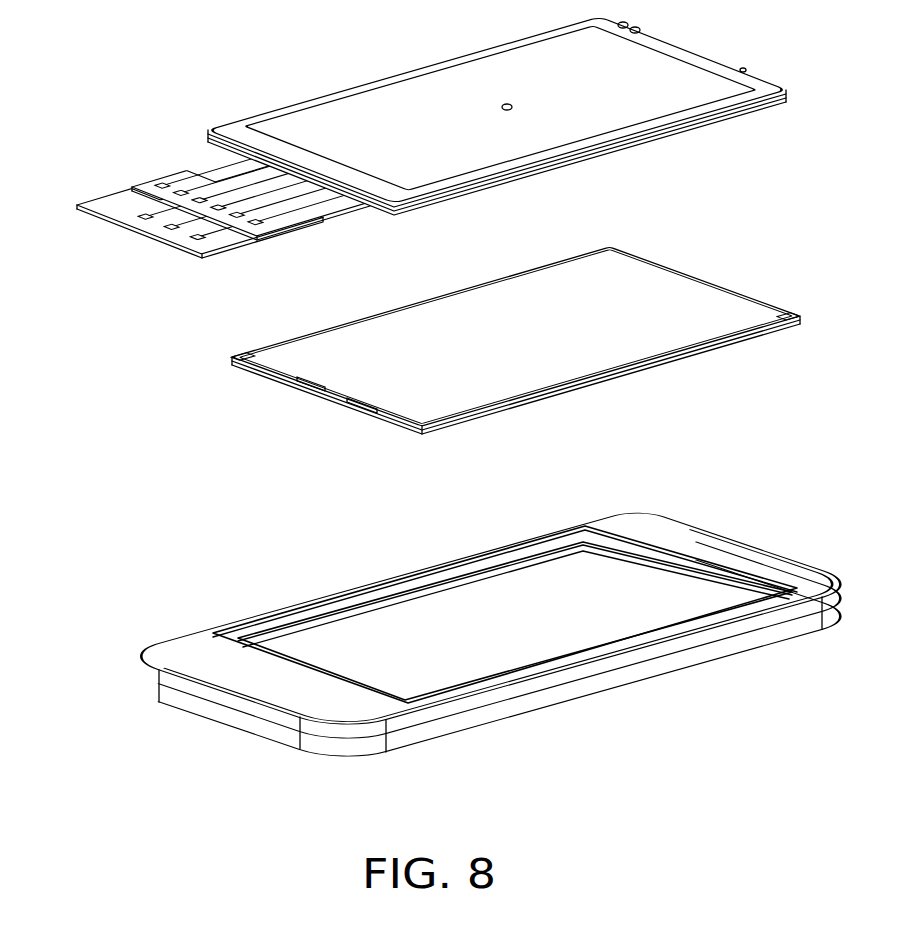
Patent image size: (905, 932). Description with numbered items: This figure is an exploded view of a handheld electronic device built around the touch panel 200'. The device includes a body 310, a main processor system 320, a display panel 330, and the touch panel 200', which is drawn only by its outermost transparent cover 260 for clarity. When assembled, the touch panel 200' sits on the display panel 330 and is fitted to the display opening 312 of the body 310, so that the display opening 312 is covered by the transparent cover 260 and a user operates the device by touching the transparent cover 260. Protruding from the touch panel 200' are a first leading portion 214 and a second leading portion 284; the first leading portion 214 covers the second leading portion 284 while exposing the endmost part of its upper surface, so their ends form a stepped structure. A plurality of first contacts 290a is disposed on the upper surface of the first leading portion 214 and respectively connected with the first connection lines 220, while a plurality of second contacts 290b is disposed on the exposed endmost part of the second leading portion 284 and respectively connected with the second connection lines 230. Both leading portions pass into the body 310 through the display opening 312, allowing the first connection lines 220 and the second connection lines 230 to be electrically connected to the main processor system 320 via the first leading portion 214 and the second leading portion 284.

The touch panel 200' is at (442, 387).
The transparent cover 260 is at (688, 78).
The first connection lines 220 is at (227, 180).
The second connection lines 230 is at (131, 201).
The first contacts 290a is at (159, 185).
The second contacts 290b is at (111, 207).
The second leading portion 284 is at (208, 246).
The first leading portion 214 is at (265, 227).
The display panel 330 is at (683, 302).
The body 310 is at (188, 652).
The display opening 312 is at (675, 586).
The main processor system 320 is at (322, 662).